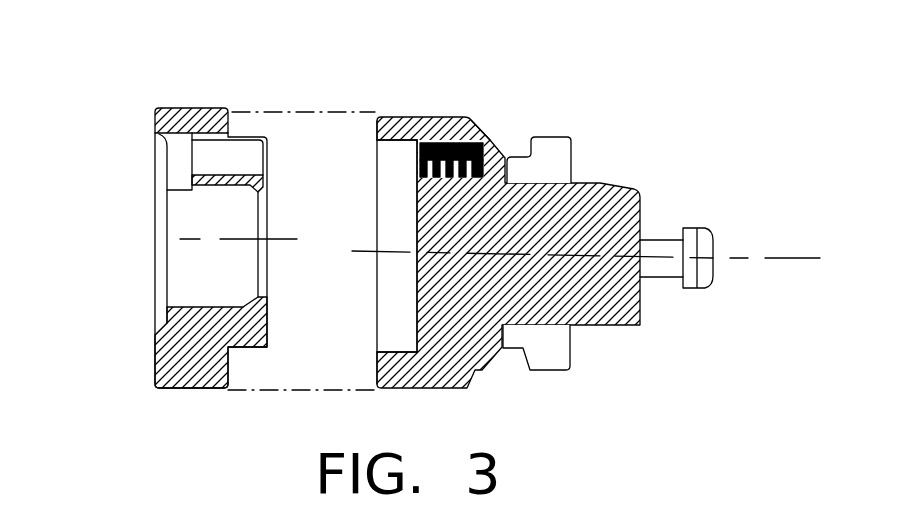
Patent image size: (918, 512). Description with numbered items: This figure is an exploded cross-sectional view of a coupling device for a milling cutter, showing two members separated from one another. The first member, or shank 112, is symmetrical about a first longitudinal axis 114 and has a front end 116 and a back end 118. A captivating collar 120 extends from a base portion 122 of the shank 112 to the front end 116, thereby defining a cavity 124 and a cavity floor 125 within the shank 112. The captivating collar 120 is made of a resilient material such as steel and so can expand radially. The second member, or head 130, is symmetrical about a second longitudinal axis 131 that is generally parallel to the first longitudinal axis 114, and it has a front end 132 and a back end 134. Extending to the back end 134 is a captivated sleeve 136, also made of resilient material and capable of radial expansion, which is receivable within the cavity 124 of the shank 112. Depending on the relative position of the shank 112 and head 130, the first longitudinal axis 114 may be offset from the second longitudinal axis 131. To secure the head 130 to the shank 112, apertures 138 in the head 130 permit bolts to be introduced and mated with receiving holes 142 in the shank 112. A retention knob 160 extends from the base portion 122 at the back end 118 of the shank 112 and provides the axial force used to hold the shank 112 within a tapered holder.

The shank 112 is at (577, 114).
The first longitudinal axis 114 is at (742, 258).
The front end 116 is at (373, 131).
The back end 118 is at (643, 213).
The captivating collar 120 is at (421, 117).
The base portion 122 is at (640, 192).
The cavity 124 is at (390, 291).
The cavity floor 125 is at (415, 328).
The head 130 is at (150, 102).
The second longitudinal axis 131 is at (160, 235).
The front end 132 is at (150, 113).
The back end 134 is at (267, 185).
The captivated sleeve 136 is at (255, 348).
The apertures 138 is at (177, 165).
The receiving holes 142 is at (417, 168).
The retention knob 160 is at (708, 232).